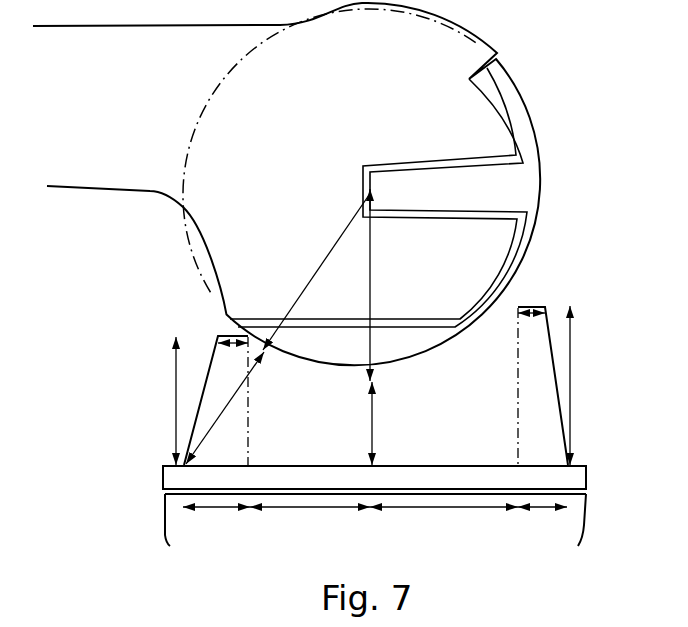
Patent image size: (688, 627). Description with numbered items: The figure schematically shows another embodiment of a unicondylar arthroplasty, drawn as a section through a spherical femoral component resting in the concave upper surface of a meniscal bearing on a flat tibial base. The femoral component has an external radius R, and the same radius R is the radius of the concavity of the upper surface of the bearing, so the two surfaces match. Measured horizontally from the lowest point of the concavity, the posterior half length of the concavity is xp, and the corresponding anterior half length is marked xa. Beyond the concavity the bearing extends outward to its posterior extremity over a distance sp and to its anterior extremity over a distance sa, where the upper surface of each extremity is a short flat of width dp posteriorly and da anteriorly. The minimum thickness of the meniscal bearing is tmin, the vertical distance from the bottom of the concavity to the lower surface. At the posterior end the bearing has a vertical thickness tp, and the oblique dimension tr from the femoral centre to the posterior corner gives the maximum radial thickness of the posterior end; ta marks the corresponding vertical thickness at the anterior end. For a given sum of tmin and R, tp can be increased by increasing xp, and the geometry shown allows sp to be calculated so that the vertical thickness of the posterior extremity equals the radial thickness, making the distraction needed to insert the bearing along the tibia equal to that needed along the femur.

The external radius R is at (316, 285).
The posterior vertical thickness tp is at (162, 401).
The maximum radial thickness tr is at (225, 408).
The posterior pad width dp is at (233, 364).
The minimum thickness tmin is at (399, 423).
The anterior pad width da is at (532, 333).
The anterior pad thickness ta is at (586, 385).
The posterior flat length sp is at (216, 527).
The posterior half length xp is at (310, 527).
The anterior offset xa is at (444, 524).
The anterior support distance sa is at (542, 525).